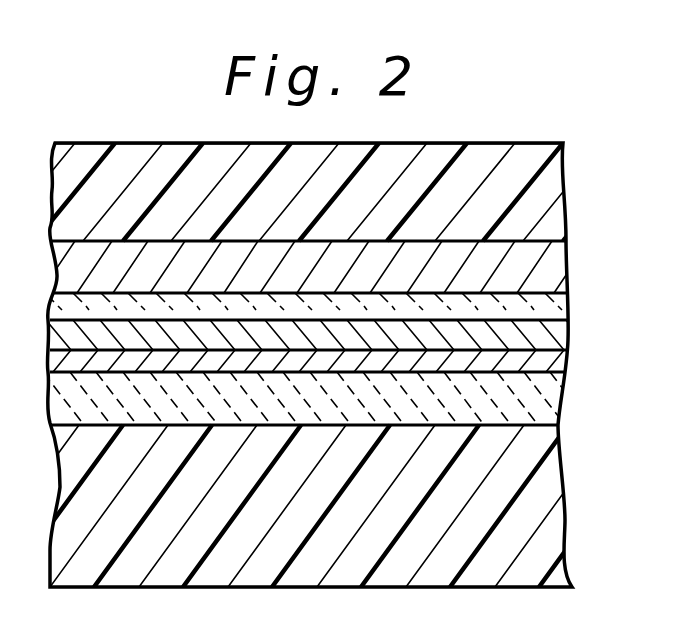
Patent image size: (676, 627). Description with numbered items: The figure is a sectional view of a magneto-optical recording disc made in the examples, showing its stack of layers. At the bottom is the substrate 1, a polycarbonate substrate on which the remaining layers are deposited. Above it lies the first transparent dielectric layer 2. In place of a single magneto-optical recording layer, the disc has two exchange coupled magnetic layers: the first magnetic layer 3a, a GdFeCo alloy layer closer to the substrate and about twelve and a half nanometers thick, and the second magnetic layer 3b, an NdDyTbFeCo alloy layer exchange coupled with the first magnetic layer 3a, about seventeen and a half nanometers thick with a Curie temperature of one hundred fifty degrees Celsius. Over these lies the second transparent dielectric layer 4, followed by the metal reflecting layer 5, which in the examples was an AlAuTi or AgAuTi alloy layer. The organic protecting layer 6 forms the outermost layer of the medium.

The substrate 1 is at (553, 517).
The first transparent dielectric layer 2 is at (560, 412).
The first magnetic layer 3a is at (562, 356).
The second magnetic layer 3b is at (563, 343).
The second transparent dielectric layer 4 is at (563, 306).
The metal reflecting layer 5 is at (556, 262).
The organic protecting layer 6 is at (551, 190).